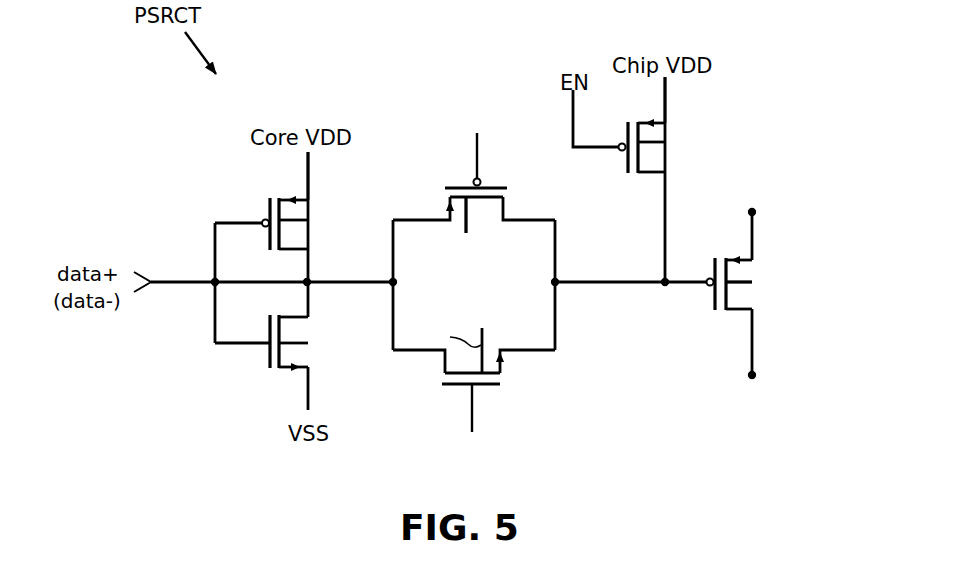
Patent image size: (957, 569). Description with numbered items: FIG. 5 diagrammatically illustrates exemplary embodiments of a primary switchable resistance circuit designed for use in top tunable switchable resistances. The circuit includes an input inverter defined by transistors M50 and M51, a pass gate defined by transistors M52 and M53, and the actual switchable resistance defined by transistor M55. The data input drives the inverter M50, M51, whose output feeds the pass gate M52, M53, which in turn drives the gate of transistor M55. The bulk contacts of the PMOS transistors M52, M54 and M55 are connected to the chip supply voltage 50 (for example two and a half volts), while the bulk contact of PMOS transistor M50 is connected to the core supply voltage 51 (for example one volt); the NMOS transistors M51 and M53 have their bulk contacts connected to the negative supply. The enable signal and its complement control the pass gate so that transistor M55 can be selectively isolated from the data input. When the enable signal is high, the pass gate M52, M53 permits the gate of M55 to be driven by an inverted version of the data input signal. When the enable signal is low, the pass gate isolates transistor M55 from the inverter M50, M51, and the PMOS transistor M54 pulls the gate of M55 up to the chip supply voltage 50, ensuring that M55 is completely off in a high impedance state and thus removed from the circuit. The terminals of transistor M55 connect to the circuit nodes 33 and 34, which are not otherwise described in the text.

The chip VDD 50 is at (665, 95).
The core VDD 51 is at (310, 160).
The first pad terminal 33 is at (752, 228).
The second pad terminal 34 is at (752, 338).
The transistor M50 is at (262, 196).
The transistor M51 is at (259, 379).
The transistor M52 is at (530, 199).
The transistor M53 is at (516, 386).
The PMOS transistor M54 is at (684, 158).
The transistor M55 is at (712, 323).